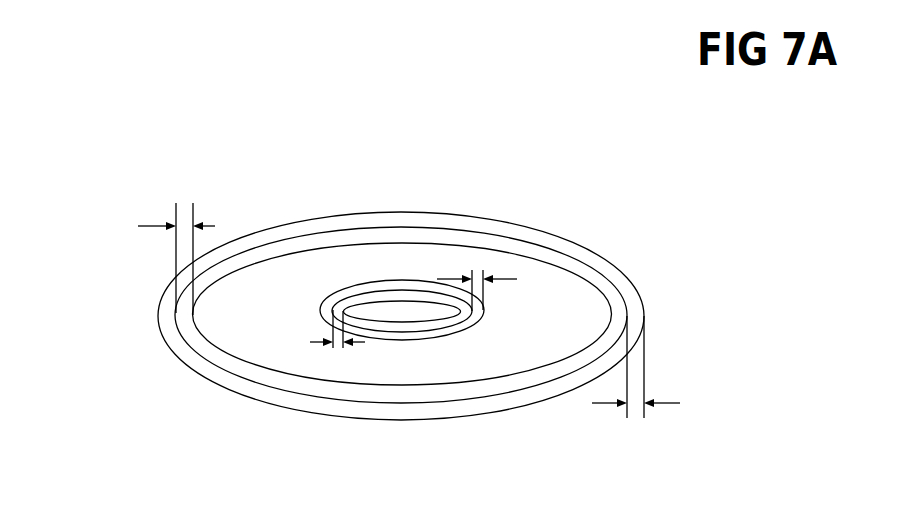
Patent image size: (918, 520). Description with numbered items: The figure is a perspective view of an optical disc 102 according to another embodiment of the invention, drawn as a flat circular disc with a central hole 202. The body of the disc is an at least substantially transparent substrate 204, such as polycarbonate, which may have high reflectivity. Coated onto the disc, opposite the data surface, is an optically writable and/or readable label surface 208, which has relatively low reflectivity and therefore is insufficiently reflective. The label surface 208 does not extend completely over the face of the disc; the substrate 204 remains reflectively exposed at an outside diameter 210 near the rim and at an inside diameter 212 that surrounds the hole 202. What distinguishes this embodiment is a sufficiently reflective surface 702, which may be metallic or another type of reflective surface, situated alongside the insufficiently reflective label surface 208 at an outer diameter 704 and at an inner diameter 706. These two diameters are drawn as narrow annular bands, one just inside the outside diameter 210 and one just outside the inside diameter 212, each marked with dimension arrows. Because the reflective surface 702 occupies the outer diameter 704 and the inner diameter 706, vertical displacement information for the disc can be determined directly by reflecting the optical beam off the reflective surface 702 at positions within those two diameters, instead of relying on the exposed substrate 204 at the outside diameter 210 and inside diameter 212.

The optical disc 102 is at (136, 242).
The substrate 204 is at (285, 227).
The sufficiently reflective surface 702 is at (408, 232).
The outer diameter 704 is at (188, 213).
The outside diameter 210 is at (628, 413).
The hole 202 is at (420, 322).
The label surface 208 is at (420, 375).
The inside diameter 212 is at (333, 345).
The inner diameter 706 is at (470, 283).